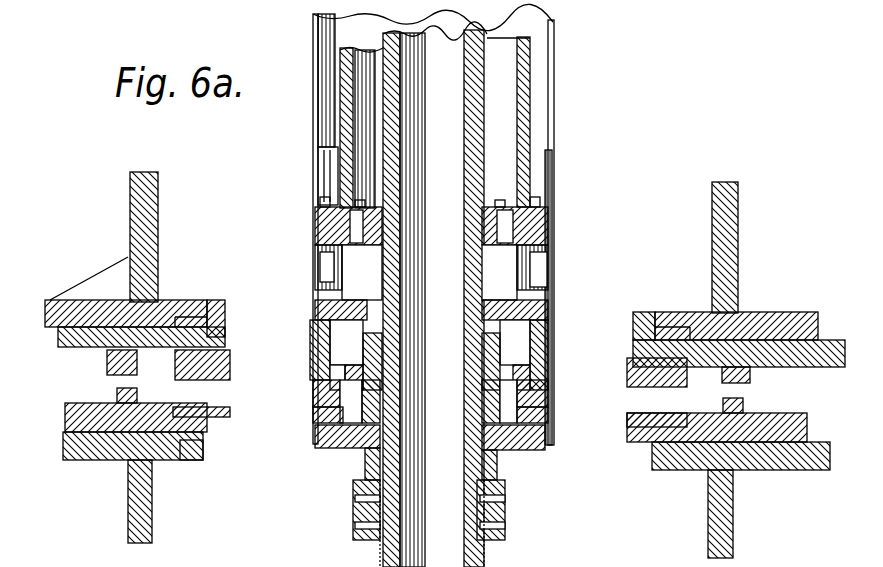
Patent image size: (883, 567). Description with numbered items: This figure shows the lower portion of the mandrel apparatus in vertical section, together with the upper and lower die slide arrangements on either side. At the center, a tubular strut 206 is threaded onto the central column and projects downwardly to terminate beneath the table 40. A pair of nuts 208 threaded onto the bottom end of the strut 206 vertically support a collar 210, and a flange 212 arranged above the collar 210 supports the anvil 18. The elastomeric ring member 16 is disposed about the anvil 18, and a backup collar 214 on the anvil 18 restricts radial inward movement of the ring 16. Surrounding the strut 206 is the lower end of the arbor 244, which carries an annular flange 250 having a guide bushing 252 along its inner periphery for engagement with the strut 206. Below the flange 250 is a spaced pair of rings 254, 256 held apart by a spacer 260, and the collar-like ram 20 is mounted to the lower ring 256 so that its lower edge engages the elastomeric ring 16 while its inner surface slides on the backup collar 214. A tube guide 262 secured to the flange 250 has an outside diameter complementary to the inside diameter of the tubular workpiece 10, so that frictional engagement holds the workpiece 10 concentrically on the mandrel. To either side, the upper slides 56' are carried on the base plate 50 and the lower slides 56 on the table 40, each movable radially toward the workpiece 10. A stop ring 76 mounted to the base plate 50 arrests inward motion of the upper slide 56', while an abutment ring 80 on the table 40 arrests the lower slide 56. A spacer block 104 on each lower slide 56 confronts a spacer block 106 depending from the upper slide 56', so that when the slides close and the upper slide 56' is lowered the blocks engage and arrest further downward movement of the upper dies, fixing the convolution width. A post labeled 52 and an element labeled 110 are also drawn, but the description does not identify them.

The workpiece 10 is at (313, 33).
The elastomeric ring member 16 is at (547, 405).
The anvil 18 is at (313, 410).
The ram 20 is at (550, 332).
The table 40 is at (100, 460).
The base plate 50 is at (167, 310).
The post 52 is at (727, 198).
The slide 56 is at (452, 446).
The slide 56' is at (452, 361).
The stop ring 76 is at (220, 303).
The abutment ring 80 is at (197, 462).
The spacer block 104 is at (117, 395).
The spacer block 106 is at (137, 368).
The spring sleeve 110 is at (315, 327).
The tubular strut 206 is at (487, 76).
The nuts 208 is at (507, 523).
The collar 210 is at (497, 467).
The flange 212 is at (328, 450).
The backup collar 214 is at (313, 370).
The arbor 244 is at (523, 101).
The annular flange 250 is at (543, 210).
The guide bushing 252 is at (550, 265).
The ring 254 is at (530, 240).
The ring 256 is at (553, 308).
The spacer 260 is at (342, 260).
The tube guide 262 is at (322, 158).